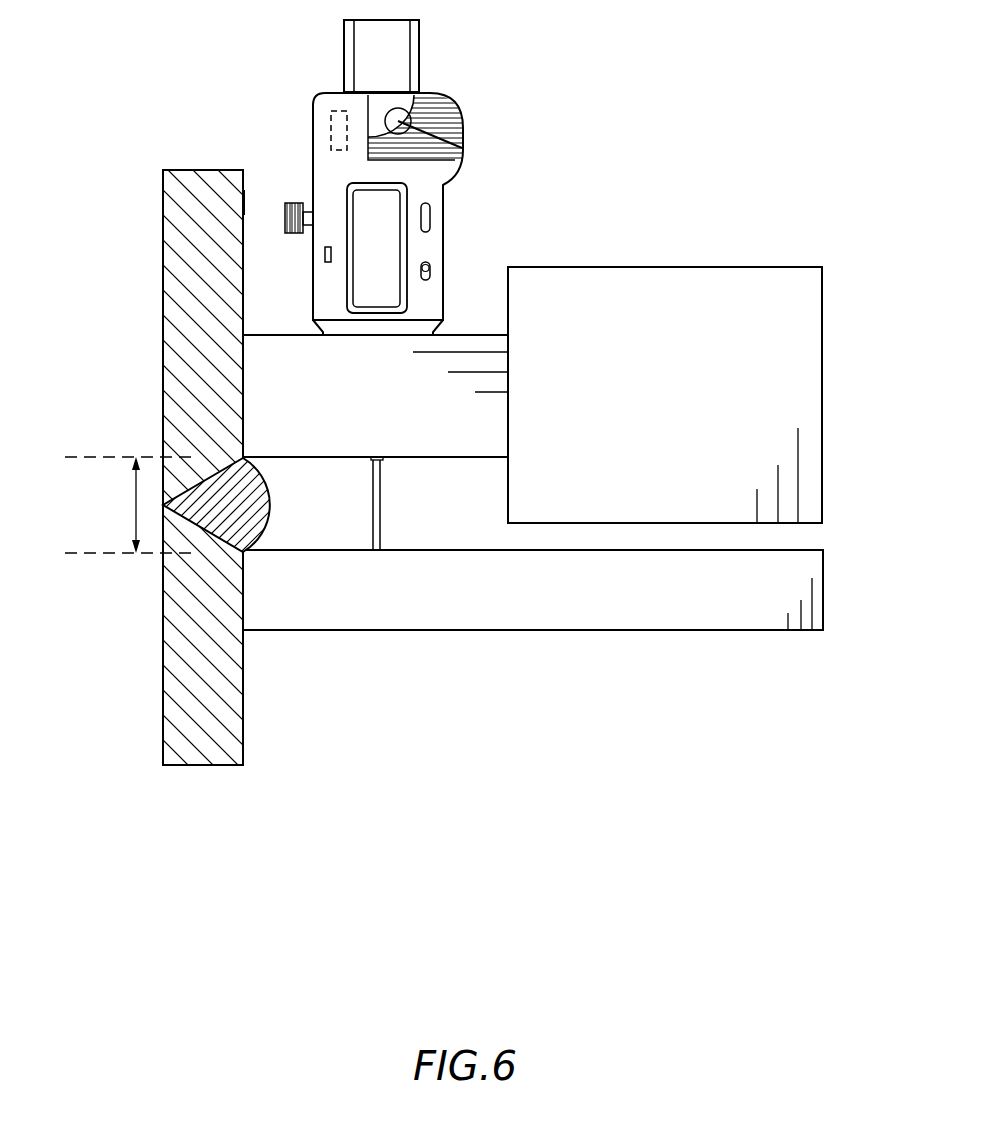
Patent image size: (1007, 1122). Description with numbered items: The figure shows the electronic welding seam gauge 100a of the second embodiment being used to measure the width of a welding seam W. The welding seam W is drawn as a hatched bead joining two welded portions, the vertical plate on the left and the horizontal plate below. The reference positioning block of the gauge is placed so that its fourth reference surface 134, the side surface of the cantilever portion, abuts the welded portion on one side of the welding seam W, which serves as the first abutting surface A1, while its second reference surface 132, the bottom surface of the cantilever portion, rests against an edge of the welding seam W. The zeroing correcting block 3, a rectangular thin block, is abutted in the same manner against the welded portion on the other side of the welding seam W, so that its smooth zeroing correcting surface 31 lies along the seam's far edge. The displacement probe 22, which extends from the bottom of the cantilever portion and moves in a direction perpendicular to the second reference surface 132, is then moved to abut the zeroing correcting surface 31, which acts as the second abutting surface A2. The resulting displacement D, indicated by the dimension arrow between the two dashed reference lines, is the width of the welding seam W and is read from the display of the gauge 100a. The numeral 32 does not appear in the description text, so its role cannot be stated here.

The electronic welding seam gauge 100a is at (784, 81).
The fourth reference edge 134 is at (243, 383).
The second reference edge 132 is at (462, 458).
The displacement probe 22 is at (377, 515).
The zeroing correcting block 3 is at (464, 467).
The zeroing correcting surface 31 is at (818, 549).
The vertical plate of workpiece 32 is at (243, 587).
The welding seam W is at (245, 522).
The displacement D is at (136, 504).
The first abutting surface A1 is at (245, 202).
The second abutting surface A2 is at (410, 550).